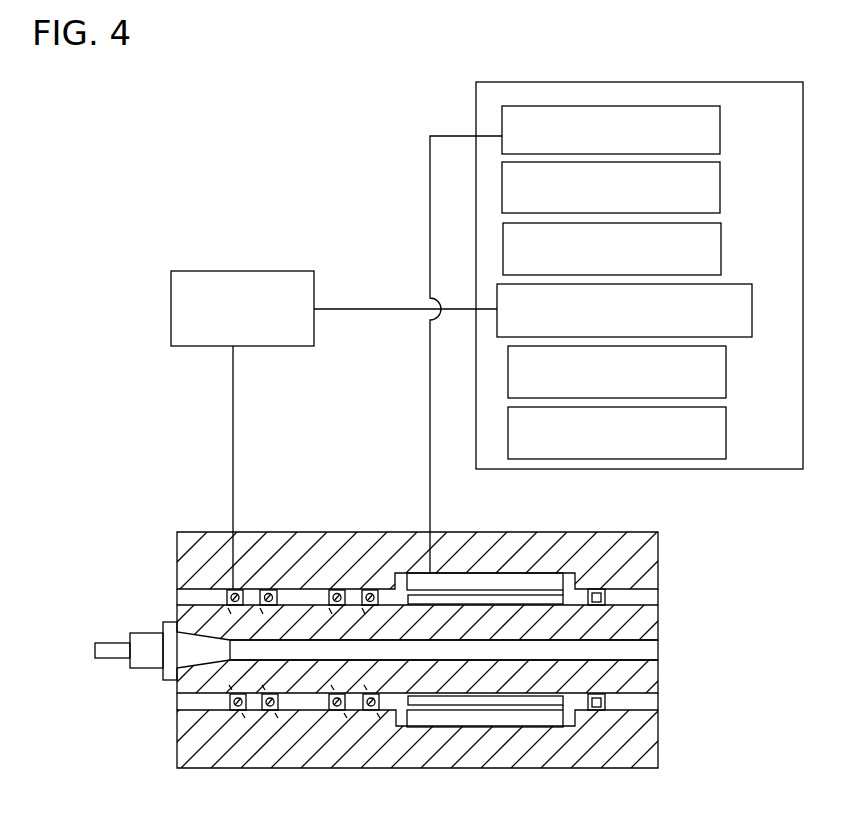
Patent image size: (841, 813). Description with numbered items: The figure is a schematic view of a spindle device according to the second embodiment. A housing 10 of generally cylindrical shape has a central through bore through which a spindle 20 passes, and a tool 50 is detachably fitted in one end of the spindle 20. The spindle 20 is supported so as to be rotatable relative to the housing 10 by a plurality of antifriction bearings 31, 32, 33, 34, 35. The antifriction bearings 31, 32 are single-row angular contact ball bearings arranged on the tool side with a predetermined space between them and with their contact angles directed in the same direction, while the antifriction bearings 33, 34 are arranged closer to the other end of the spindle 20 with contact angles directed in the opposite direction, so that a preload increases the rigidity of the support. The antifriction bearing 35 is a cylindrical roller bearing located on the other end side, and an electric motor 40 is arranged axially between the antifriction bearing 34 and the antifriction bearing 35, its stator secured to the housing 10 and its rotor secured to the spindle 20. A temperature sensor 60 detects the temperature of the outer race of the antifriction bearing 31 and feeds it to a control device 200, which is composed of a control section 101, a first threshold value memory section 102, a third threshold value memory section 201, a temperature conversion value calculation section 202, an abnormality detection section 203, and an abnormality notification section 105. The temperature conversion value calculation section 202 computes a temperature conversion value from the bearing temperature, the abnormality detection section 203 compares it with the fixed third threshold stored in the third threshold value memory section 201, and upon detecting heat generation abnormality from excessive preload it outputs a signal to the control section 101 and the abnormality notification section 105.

The control device 200 is at (681, 82).
The control section 101 is at (720, 141).
The first threshold value memory section 102 is at (720, 197).
The third threshold value memory section 201 is at (721, 262).
The temperature conversion value calculation section 202 is at (752, 300).
The abnormality detection section 203 is at (726, 385).
The abnormality notification section 105 is at (726, 446).
The temperature sensor 60 is at (288, 271).
The housing 10 is at (201, 532).
The spindle 20 is at (177, 622).
The tool 50 is at (115, 642).
The electric motor 40 is at (522, 578).
The antifriction bearing 31 is at (226, 596).
The antifriction bearing 32 is at (268, 589).
The antifriction bearing 33 is at (337, 589).
The antifriction bearing 34 is at (373, 589).
The antifriction bearing 35 is at (597, 588).